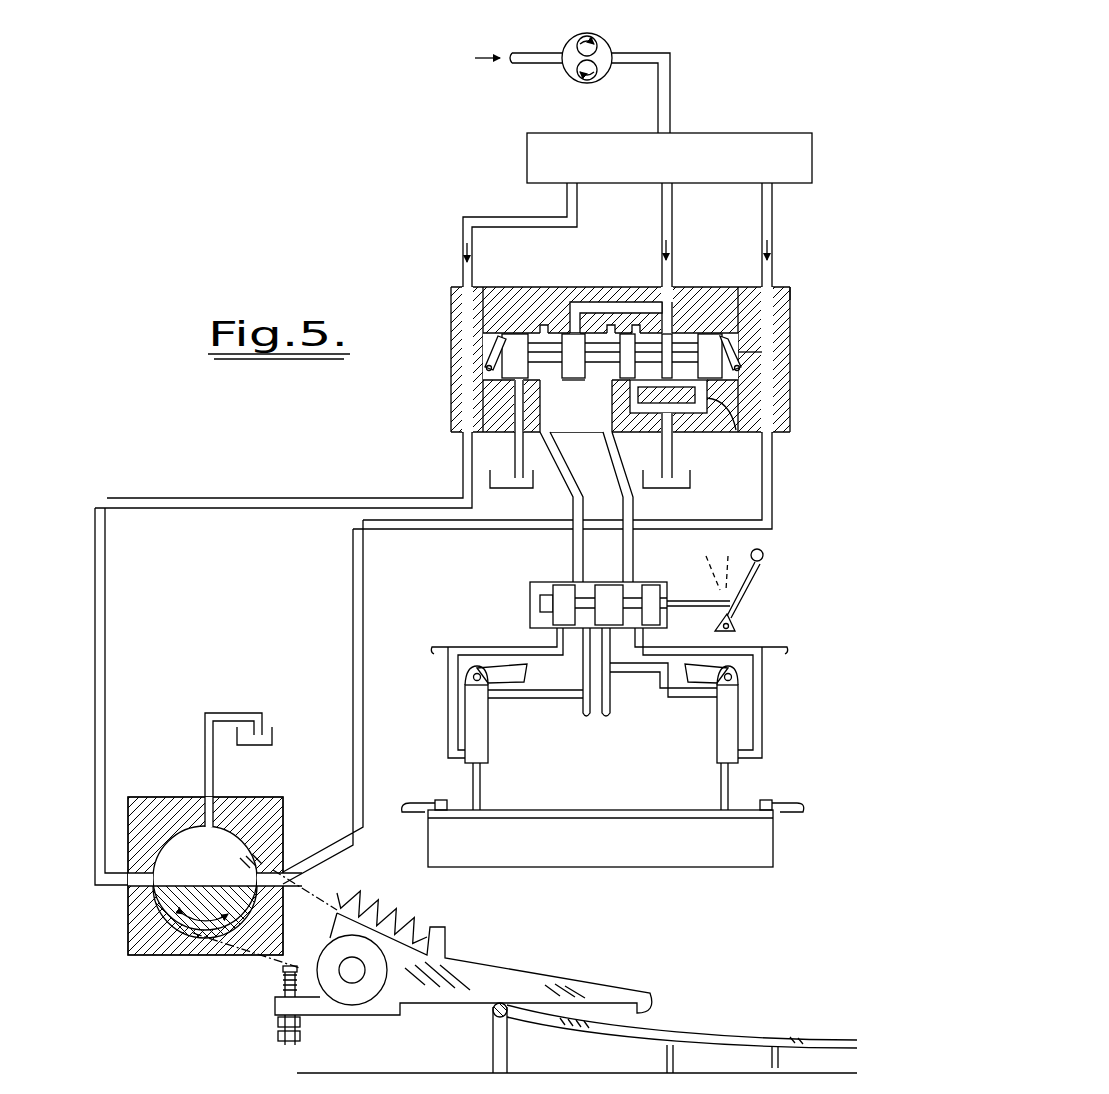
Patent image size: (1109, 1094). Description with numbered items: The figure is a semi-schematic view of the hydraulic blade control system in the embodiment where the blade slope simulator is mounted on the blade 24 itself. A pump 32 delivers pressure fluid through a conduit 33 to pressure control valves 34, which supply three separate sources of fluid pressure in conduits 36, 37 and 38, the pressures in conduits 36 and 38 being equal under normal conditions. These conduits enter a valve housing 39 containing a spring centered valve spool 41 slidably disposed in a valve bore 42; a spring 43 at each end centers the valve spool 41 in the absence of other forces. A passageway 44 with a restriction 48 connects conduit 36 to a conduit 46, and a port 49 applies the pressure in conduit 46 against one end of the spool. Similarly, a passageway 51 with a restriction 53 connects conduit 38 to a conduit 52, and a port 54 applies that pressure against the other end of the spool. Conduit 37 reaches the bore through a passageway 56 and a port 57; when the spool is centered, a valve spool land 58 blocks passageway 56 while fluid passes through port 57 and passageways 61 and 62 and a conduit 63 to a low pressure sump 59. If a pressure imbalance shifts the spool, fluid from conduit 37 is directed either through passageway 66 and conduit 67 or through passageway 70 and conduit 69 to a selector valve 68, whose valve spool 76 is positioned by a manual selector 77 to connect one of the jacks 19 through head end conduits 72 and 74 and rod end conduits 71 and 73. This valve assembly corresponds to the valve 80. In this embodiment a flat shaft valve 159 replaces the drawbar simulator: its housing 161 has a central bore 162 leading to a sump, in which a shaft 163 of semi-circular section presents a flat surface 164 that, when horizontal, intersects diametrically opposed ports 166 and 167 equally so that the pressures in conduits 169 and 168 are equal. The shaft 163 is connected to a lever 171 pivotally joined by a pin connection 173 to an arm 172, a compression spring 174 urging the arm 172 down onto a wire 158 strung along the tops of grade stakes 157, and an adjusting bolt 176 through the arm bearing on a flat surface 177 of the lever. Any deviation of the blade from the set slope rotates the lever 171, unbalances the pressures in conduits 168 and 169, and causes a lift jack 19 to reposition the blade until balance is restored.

The pump 32 is at (604, 47).
The conduit 33 is at (671, 84).
The pressure control valves 34 is at (640, 133).
The conduit 36 is at (578, 208).
The conduit 37 is at (673, 208).
The conduit 38 is at (774, 213).
The valve housing 39 is at (540, 287).
The valve spool 41 is at (512, 330).
The valve bore 42 is at (690, 302).
The spring 43 is at (485, 347).
The passageway 44 is at (458, 407).
The conduit 46 is at (278, 498).
The restriction 48 is at (457, 318).
The port 49 is at (470, 365).
The passageway 51 is at (782, 326).
The conduit 52 is at (774, 487).
The restriction 53 is at (791, 302).
The port 54 is at (770, 353).
The valve housing passageway 56 is at (625, 296).
The port 57 is at (668, 300).
The valve spool land 58 is at (547, 385).
The low pressure sump 59 is at (685, 490).
The passageway 61 is at (695, 425).
The passageway 62 is at (633, 432).
The conduit 63 is at (680, 472).
The passageway 66 is at (616, 412).
The conduit 67 is at (634, 553).
The selector valve 68 is at (528, 600).
The conduit 69 is at (572, 553).
The passageway 70 is at (560, 432).
The conduit 71 is at (582, 681).
The conduit 72 is at (611, 711).
The conduit 73 is at (490, 650).
The conduit 74 is at (708, 650).
The valve spool 76 is at (662, 592).
The manual selector 77 is at (748, 601).
The valve 80 is at (450, 298).
The lift jacks 19 is at (488, 741).
The blade 24 is at (524, 813).
The grade stakes 157 is at (493, 1046).
The wire 158 is at (716, 1040).
The flat shaft valve 159 is at (286, 819).
The housing 161 is at (184, 797).
The central bore 162 is at (178, 830).
The shaft 163 is at (128, 937).
The flat surface 164 is at (218, 878).
The port 166 is at (116, 887).
The port 167 is at (274, 868).
The conduit 168 is at (352, 633).
The conduit 169 is at (105, 641).
The lever 171 is at (328, 890).
The arm 172 is at (470, 972).
The pin connection 173 is at (352, 983).
The compression spring 174 is at (370, 913).
The adjusting bolt 176 is at (291, 1046).
The flat surface 177 is at (282, 970).